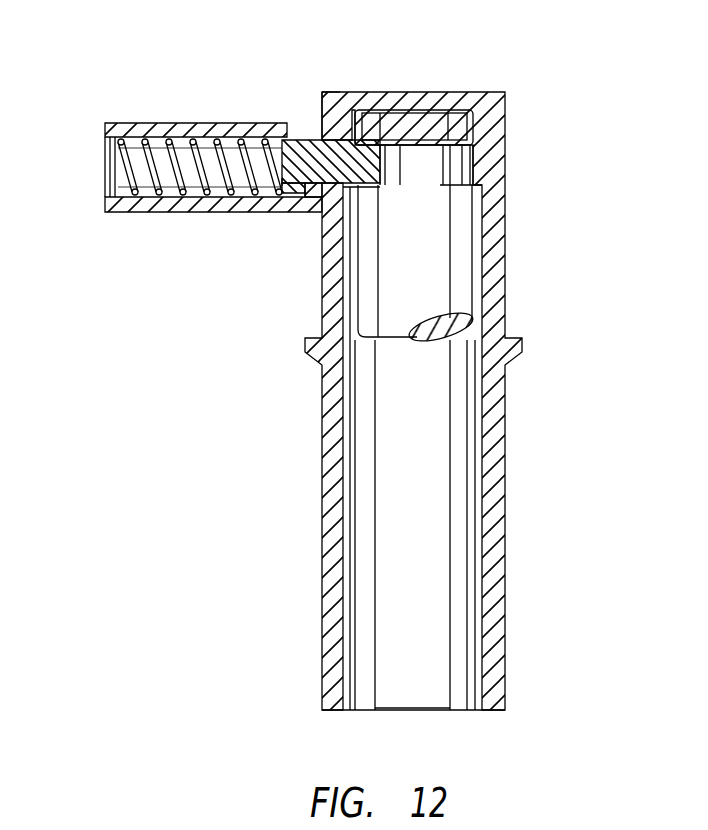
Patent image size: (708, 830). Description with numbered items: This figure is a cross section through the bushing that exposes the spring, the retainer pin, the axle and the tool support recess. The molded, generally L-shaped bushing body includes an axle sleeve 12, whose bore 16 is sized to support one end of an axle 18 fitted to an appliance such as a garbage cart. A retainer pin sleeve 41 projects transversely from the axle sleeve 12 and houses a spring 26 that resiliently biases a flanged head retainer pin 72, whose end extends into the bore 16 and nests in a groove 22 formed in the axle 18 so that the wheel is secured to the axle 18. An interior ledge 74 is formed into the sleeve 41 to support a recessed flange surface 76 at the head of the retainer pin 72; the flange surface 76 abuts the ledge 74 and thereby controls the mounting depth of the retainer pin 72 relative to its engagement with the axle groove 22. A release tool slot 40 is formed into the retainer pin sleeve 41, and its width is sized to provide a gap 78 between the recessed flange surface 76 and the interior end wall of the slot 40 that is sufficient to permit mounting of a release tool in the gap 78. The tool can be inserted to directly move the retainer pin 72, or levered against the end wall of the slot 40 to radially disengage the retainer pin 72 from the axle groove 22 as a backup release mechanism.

The axle sleeve 12 is at (508, 455).
The bore 16 is at (440, 700).
The axle 18 is at (465, 226).
The groove 22 is at (455, 160).
The spring 26 is at (108, 160).
The release tool slot 40 is at (290, 126).
The retainer pin sleeve 41 is at (130, 123).
The flanged head retainer pin 72 is at (290, 186).
The interior ledge 74 is at (312, 196).
The recessed flange surface 76 is at (310, 120).
The gap 78 is at (314, 118).